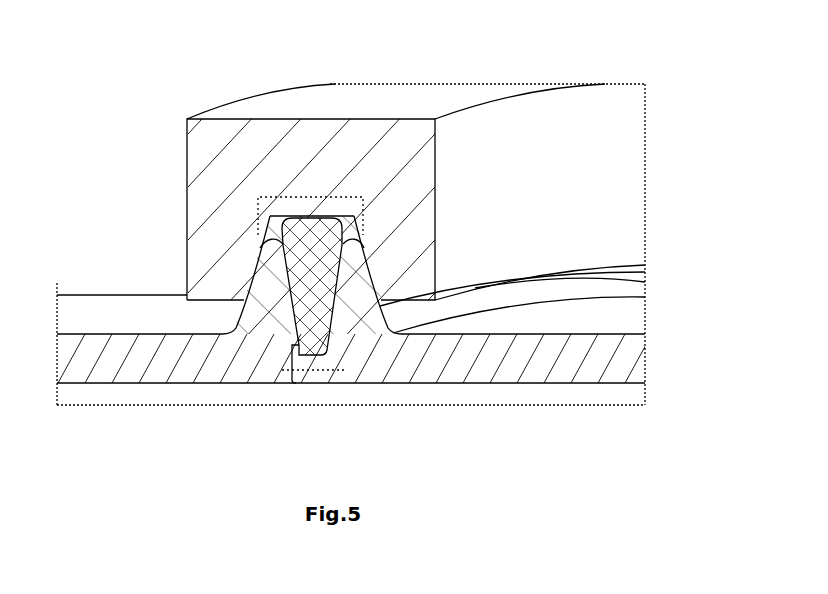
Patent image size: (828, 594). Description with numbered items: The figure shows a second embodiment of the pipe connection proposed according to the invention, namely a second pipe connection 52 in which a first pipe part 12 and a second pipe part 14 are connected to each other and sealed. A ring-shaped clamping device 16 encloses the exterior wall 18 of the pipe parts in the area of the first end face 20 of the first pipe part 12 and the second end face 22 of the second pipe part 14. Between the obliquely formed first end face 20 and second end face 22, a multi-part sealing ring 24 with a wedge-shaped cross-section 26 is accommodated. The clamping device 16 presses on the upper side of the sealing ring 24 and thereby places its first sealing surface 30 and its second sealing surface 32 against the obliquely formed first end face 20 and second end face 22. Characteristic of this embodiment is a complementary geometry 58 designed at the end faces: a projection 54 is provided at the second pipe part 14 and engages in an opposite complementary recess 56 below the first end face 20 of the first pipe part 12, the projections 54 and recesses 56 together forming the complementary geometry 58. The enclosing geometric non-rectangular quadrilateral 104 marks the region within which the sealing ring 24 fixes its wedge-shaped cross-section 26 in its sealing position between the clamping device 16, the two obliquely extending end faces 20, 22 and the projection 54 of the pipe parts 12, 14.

The first pipe part 12 is at (132, 393).
The second pipe part 14 is at (493, 393).
The clamping device 16 is at (507, 78).
The exterior wall 18 is at (120, 312).
The first end face 20 is at (260, 250).
The second end face 22 is at (366, 250).
The sealing ring 24 is at (308, 198).
The wedge-shaped cross-section 26 is at (310, 208).
The first lateral sealing surface 30 is at (246, 322).
The second lateral sealing surface 32 is at (382, 308).
The second pipe connection 52 is at (140, 118).
The projection 54 is at (288, 381).
The recess 56 is at (307, 378).
The complementary geometry 58 is at (298, 393).
The enclosing geometric non-rectangular quadrilateral 104 is at (364, 208).